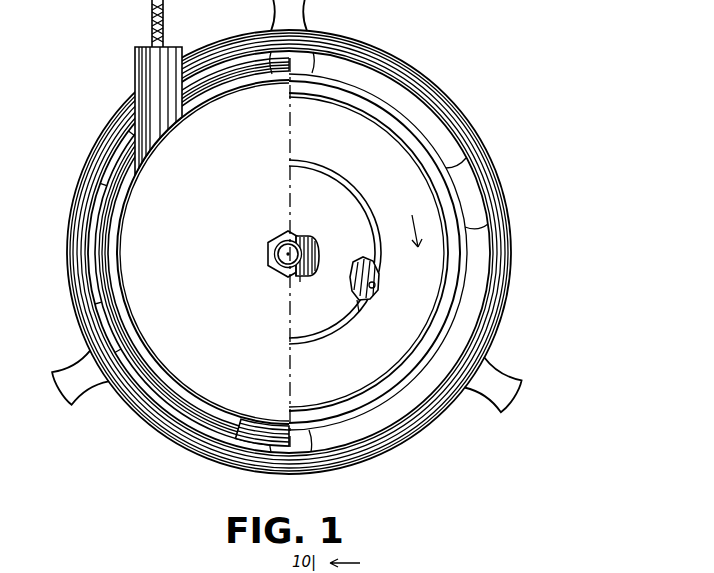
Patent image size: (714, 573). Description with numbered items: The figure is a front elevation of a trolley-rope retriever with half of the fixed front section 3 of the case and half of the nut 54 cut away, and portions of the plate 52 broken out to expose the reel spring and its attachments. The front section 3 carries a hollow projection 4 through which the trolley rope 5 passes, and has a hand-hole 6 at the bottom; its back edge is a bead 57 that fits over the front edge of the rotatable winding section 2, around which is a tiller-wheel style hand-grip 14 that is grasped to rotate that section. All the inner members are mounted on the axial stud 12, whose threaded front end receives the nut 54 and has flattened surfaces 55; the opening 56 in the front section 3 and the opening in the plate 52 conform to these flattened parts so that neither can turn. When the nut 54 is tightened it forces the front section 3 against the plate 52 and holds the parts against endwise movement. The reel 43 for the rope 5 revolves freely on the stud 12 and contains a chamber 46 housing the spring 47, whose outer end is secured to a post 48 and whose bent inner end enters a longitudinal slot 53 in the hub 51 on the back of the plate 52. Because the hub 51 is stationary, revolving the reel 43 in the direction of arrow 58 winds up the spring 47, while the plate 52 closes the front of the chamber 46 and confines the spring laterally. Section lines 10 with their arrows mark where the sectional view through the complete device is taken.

The rotatable or winding intermediate section 2 is at (463, 248).
The fixed front section 3 is at (203, 252).
The hollow extension or projection 4 is at (152, 68).
The trolley rope 5 is at (152, 13).
The hand-hole 6 is at (248, 423).
The section lines 10— 10 is at (478, 123).
The axial stud 12 is at (285, 247).
The hand-grip 14 is at (78, 222).
The reel 43 is at (335, 268).
The chamber 46 is at (366, 298).
The spring 47 is at (358, 283).
The post 48 is at (376, 286).
The hub 51 is at (303, 244).
The disk or plate 52 is at (312, 296).
The longitudinal slot 53 is at (308, 257).
The nut 54 is at (272, 243).
The flattened surfaces 55 is at (284, 263).
The opening 56 is at (282, 254).
The bead 57 is at (167, 395).
The arrow 58 is at (407, 218).